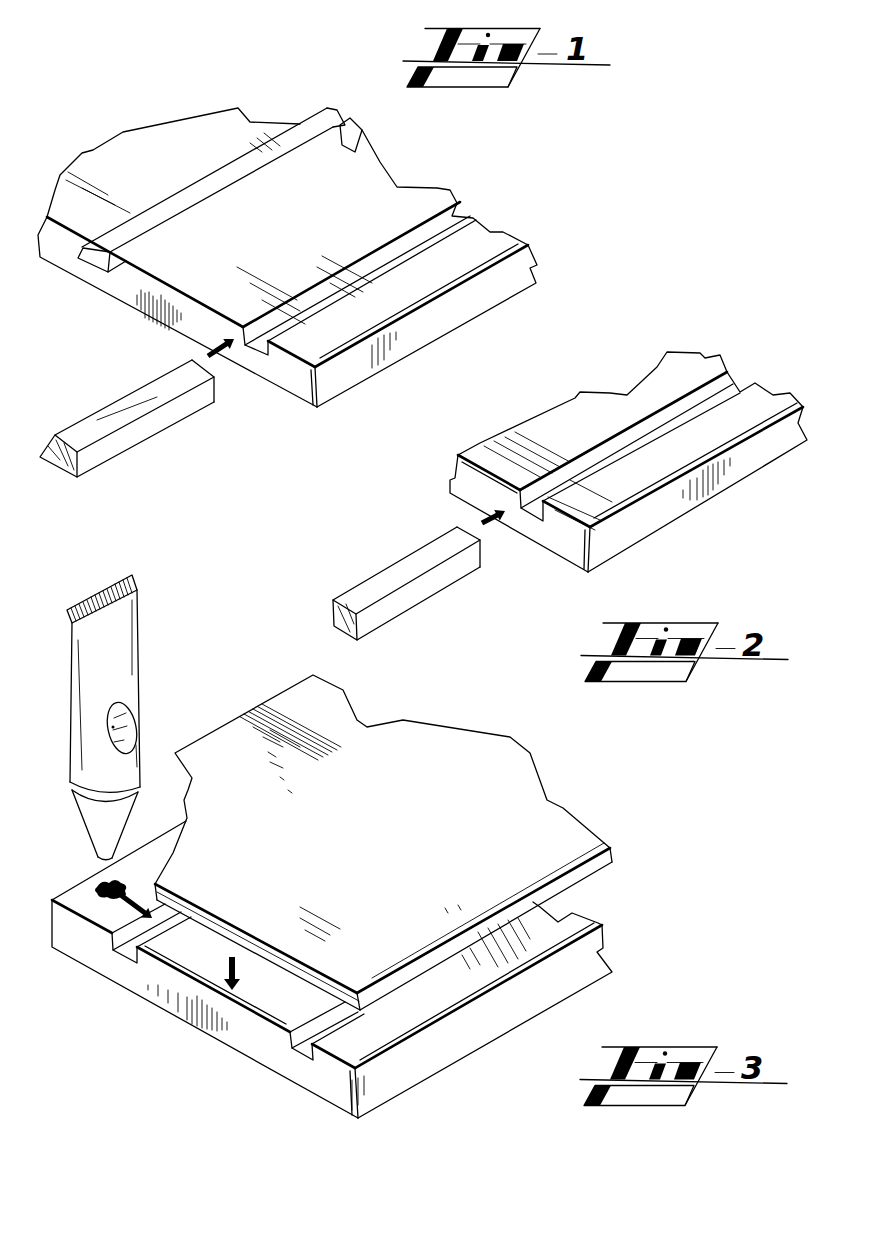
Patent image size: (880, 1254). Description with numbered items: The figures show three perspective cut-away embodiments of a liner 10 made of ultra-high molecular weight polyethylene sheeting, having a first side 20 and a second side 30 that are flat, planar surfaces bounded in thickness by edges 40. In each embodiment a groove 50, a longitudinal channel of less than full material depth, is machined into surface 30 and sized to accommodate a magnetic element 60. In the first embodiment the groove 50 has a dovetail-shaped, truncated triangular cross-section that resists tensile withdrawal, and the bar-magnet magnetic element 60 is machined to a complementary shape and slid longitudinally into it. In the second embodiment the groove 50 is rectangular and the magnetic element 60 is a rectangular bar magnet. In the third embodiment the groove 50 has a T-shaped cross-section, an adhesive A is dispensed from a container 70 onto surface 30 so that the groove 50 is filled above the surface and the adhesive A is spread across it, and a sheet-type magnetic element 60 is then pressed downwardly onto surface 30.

In FIG. 1, the liner 10 is at (535, 153).
In FIG. 2, the liner 10 is at (733, 318).
In FIG. 3, the liner 10 is at (660, 761).
In FIG. 1, the first side 20 is at (283, 393).
In FIG. 2, the first side 20 is at (730, 493).
In FIG. 3, the first side 20 is at (242, 1052).
In FIG. 1, the second side 30 is at (295, 237).
In FIG. 2, the second side 30 is at (639, 497).
In FIG. 3, the second side 30 is at (452, 1004).
In FIG. 1, the edges 40 is at (486, 290).
In FIG. 2, the edges 40 is at (650, 517).
In FIG. 3, the edges 40 is at (478, 1030).
In FIG. 1, the groove 50 is at (343, 287).
In FIG. 2, the groove 50 is at (657, 437).
In FIG. 3, the groove 50 is at (110, 952).
In FIG. 1, the magnetic element 60 is at (180, 203).
In FIG. 2, the magnetic element 60 is at (418, 568).
In FIG. 3, the magnetic element 60 is at (367, 864).
In FIG. 3, the container 70 is at (127, 640).
In FIG. 3, the adhesive A is at (123, 877).